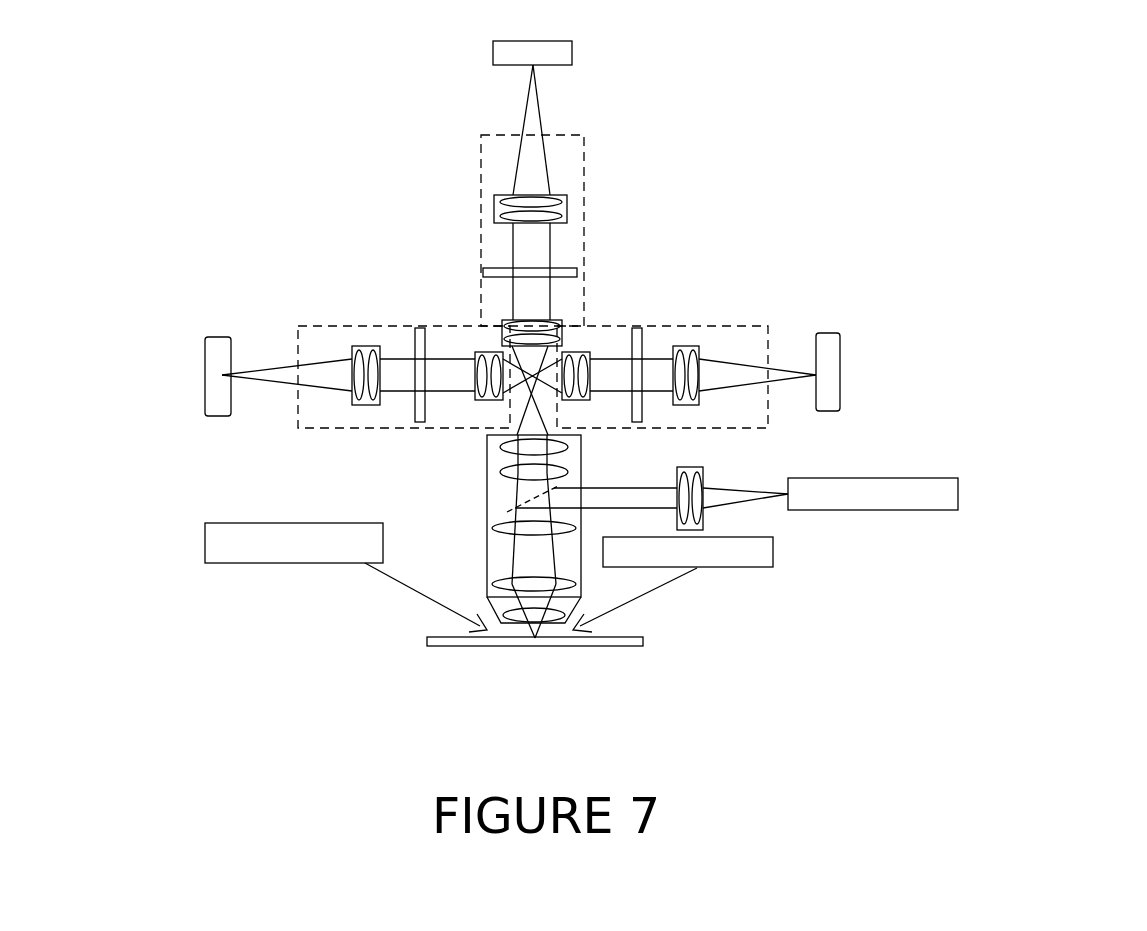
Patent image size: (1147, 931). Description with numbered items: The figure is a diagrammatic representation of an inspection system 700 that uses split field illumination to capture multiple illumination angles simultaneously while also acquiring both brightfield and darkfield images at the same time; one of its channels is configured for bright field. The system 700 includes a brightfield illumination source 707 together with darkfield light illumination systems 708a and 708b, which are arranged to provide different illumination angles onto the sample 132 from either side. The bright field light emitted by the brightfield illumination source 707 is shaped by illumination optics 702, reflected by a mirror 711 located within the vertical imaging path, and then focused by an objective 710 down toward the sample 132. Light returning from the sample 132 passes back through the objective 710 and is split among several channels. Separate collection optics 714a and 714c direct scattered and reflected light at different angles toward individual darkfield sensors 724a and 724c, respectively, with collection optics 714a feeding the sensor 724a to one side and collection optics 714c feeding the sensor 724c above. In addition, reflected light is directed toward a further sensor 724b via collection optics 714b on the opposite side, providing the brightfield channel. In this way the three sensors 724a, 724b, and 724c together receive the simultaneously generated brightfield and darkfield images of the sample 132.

The inspection system 700 is at (1043, 125).
The darkfield sensor 724c is at (493, 49).
The collection optics 714c is at (586, 165).
The darkfield sensor 724a is at (221, 337).
The collection optics 714a is at (298, 326).
The collection optics 714b is at (768, 326).
The sensor 724b is at (827, 343).
The objective 710 is at (487, 515).
The mirror 711 is at (510, 510).
The illumination optics 702 is at (703, 470).
The brightfield illumination source 707 is at (823, 510).
The darkfield light illumination system 708a is at (275, 522).
The darkfield light illumination system 708b is at (750, 567).
The sample 132 is at (632, 642).